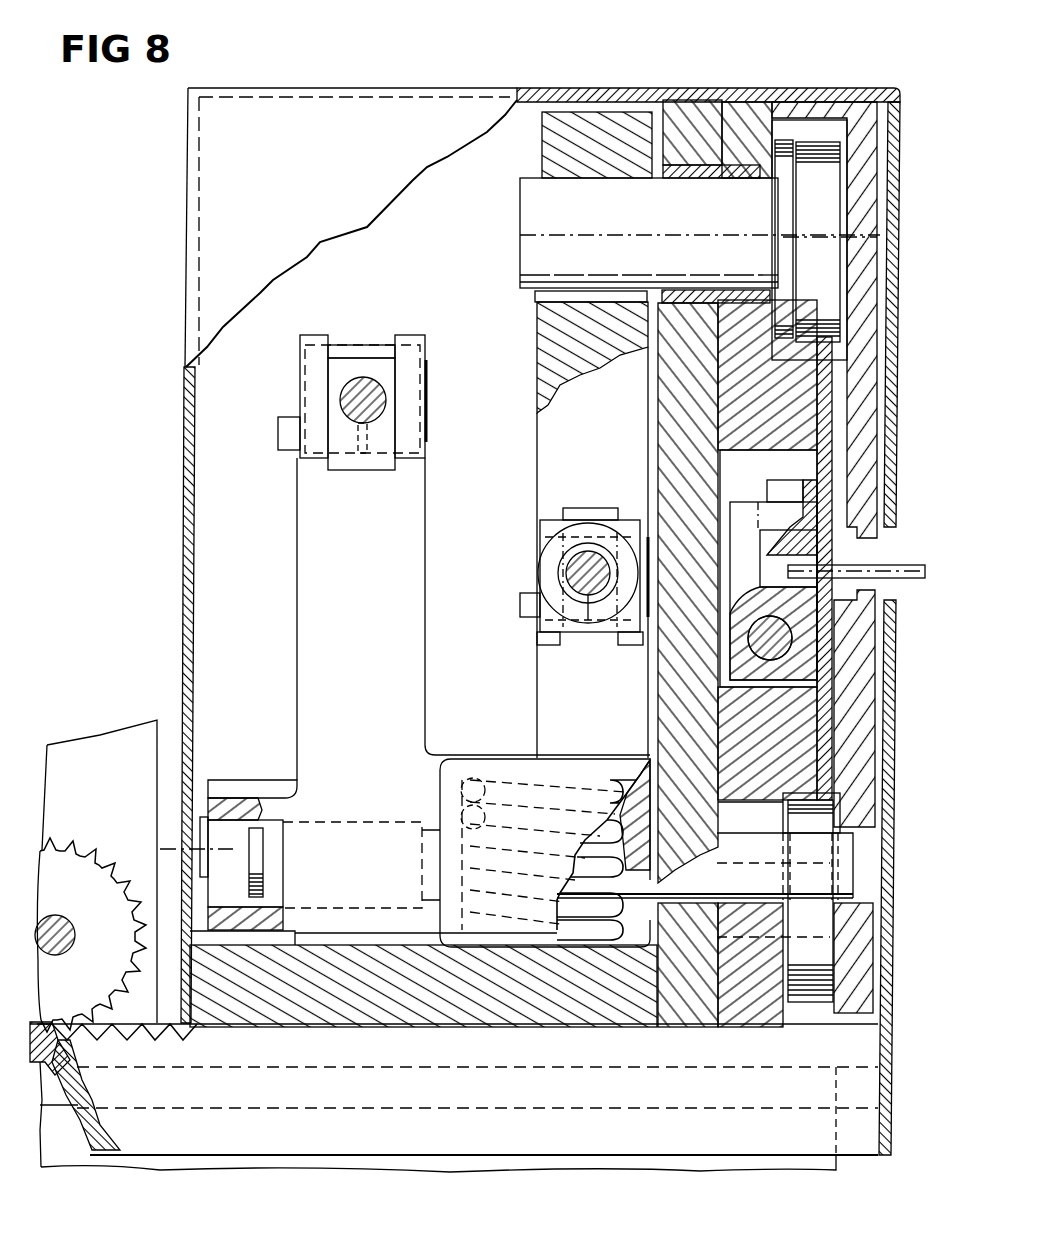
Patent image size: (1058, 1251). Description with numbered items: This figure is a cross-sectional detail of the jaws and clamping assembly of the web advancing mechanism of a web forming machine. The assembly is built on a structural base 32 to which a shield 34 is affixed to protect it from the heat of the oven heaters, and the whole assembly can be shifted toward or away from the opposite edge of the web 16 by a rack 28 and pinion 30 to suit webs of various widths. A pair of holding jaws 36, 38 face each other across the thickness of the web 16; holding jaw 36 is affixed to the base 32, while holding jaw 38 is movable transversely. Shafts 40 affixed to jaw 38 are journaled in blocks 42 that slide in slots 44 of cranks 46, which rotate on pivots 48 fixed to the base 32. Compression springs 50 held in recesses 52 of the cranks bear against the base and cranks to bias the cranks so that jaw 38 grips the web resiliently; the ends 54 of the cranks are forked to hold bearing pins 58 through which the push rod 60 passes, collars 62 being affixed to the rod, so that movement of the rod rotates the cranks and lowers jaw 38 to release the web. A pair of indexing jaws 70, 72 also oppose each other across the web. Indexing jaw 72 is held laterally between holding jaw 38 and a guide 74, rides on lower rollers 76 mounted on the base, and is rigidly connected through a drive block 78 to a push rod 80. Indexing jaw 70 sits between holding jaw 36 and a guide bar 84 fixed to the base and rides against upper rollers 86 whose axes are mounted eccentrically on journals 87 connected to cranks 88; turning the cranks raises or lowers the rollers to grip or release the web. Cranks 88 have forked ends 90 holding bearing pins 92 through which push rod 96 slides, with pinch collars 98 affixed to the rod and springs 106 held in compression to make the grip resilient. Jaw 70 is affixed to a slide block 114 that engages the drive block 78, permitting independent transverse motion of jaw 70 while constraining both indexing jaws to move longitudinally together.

The web 16 is at (893, 566).
The rack 28 is at (454, 1097).
The pinion 30 is at (96, 876).
The structural base 32 is at (454, 986).
The shield 34 is at (485, 98).
The holding jaw 36 is at (866, 428).
The holding jaw 38 is at (858, 702).
The shaft 40 is at (772, 837).
The block 42 is at (270, 897).
The slot 44 is at (224, 906).
The crank 46 is at (235, 780).
The pivot 48 is at (204, 815).
The compression spring 50 is at (585, 942).
The recess 52 is at (608, 790).
The end of crank 54 is at (310, 335).
The bearing pin 58 is at (430, 410).
The push rod 60 is at (345, 393).
The collar 62 is at (372, 347).
The indexing jaw 70 is at (828, 473).
The indexing jaw 72 is at (822, 635).
The guide 74 is at (767, 744).
The lower roller 76 is at (815, 995).
The drive block 78 is at (768, 568).
The push rod 80 is at (773, 633).
The guide bar 84 is at (767, 375).
The upper roller 86 is at (822, 145).
The journal 87 is at (520, 208).
The crank 88 is at (540, 452).
The forked end 90 is at (545, 645).
The bearing pin 92 is at (650, 630).
The push rod 96 is at (566, 572).
The pinch collar 98 is at (572, 634).
The spring 106 is at (546, 585).
The slide block 114 is at (768, 490).